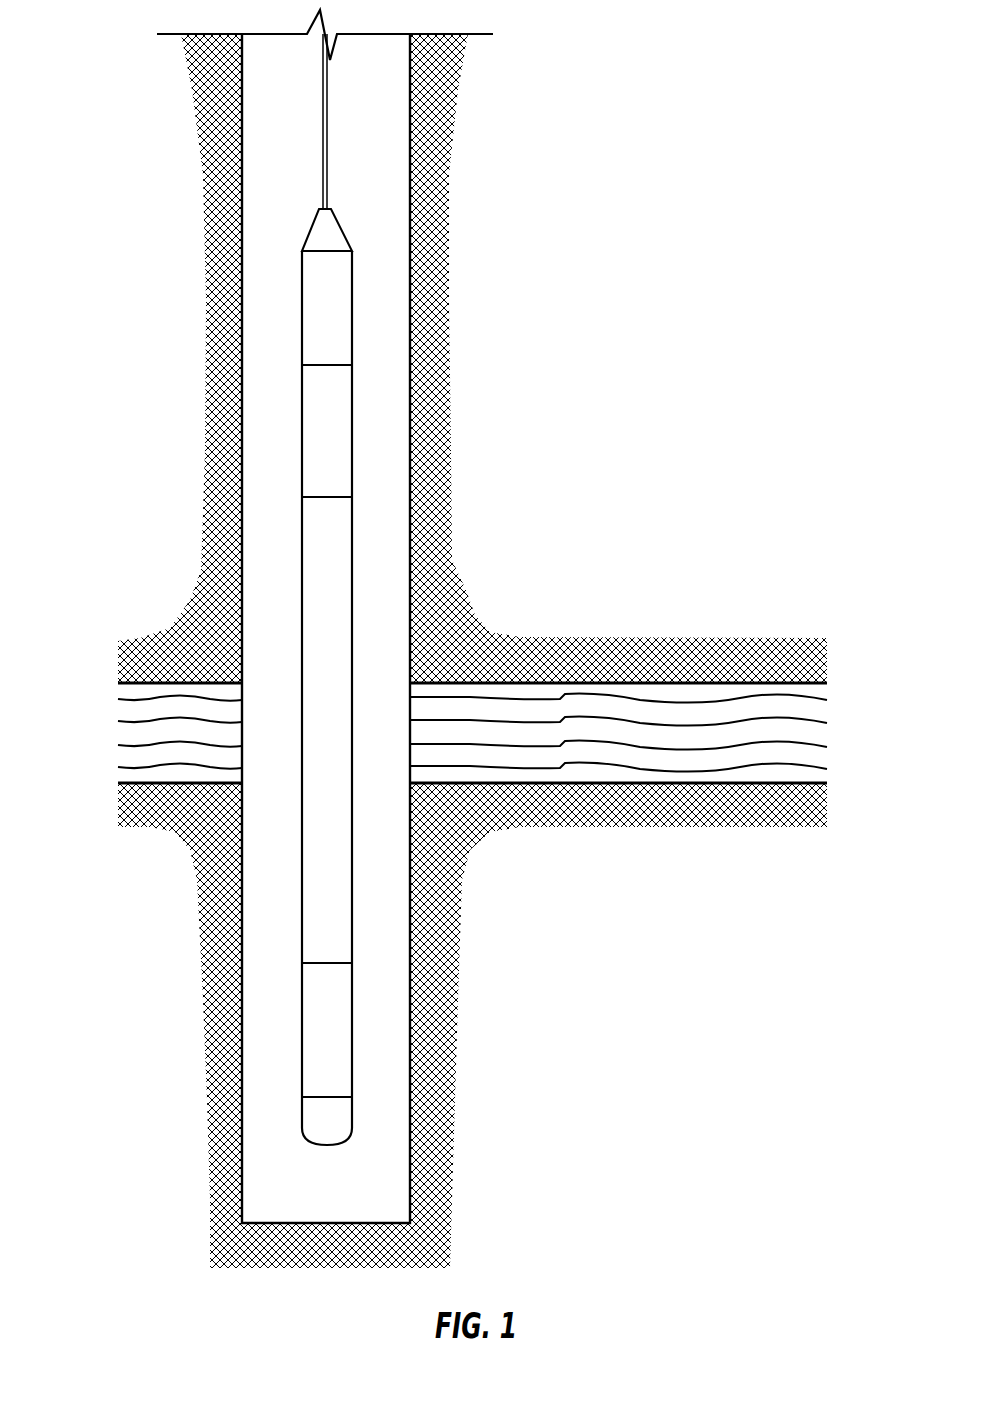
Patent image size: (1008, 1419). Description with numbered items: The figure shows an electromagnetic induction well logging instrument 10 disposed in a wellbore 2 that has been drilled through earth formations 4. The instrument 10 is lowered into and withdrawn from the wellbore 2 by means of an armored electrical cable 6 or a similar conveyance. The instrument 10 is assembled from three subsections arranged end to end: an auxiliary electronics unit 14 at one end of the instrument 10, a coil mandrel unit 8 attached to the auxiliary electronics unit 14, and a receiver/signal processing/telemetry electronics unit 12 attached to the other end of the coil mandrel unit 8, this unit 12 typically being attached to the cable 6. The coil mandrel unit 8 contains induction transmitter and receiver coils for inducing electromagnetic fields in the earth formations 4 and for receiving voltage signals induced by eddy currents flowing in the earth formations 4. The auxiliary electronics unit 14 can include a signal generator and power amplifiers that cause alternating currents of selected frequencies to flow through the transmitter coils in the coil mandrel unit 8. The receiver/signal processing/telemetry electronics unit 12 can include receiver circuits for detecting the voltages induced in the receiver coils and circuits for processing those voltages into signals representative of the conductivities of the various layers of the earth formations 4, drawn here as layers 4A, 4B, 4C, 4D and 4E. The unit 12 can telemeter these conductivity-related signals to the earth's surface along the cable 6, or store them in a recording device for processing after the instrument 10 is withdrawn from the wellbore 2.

The wellbore 2 is at (380, 128).
The earth formations 4 is at (479, 739).
The layer of the earth formations 4A is at (817, 692).
The layer of the earth formations 4B is at (817, 715).
The layer of the earth formations 4C is at (817, 735).
The layer of the earth formations 4D is at (817, 757).
The layer of the earth formations 4E is at (817, 773).
The armored electrical cable 6 is at (325, 145).
The coil mandrel unit 8 is at (312, 706).
The electromagnetic induction well logging instrument 10 is at (374, 677).
The receiver/signal processing/telemetry electronics unit 12 is at (312, 437).
The auxiliary electronics unit 14 is at (313, 1030).